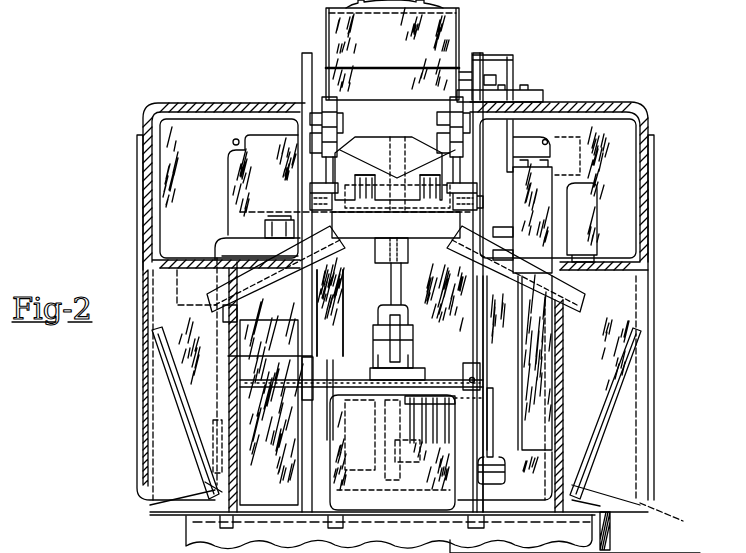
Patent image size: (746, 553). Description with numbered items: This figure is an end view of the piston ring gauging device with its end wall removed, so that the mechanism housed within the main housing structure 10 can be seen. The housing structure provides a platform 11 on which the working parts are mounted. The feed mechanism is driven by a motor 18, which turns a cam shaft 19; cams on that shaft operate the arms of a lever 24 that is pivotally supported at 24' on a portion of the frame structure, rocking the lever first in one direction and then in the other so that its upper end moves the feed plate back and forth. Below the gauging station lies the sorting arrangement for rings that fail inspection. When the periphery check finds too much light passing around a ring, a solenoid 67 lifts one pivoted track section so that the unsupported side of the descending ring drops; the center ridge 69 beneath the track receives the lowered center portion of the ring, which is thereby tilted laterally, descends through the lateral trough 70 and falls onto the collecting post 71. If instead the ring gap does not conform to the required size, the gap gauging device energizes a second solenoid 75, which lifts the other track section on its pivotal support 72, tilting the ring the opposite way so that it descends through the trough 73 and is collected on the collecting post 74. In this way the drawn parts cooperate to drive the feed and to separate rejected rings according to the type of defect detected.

The main housing structure 10 is at (148, 492).
The platform 11 is at (588, 101).
The motor 18 is at (226, 240).
The cam shaft 19 is at (495, 418).
The lever 24 is at (514, 393).
The pivotal support of lever 24' is at (361, 331).
The solenoid 67 is at (337, 138).
The center ridge 69 is at (402, 170).
The lateral trough 70 is at (286, 286).
The collecting post 71 is at (186, 382).
The pivotal support 72 is at (310, 208).
The trough 73 is at (474, 270).
The collecting post 74 is at (600, 438).
The solenoid 75 is at (444, 140).